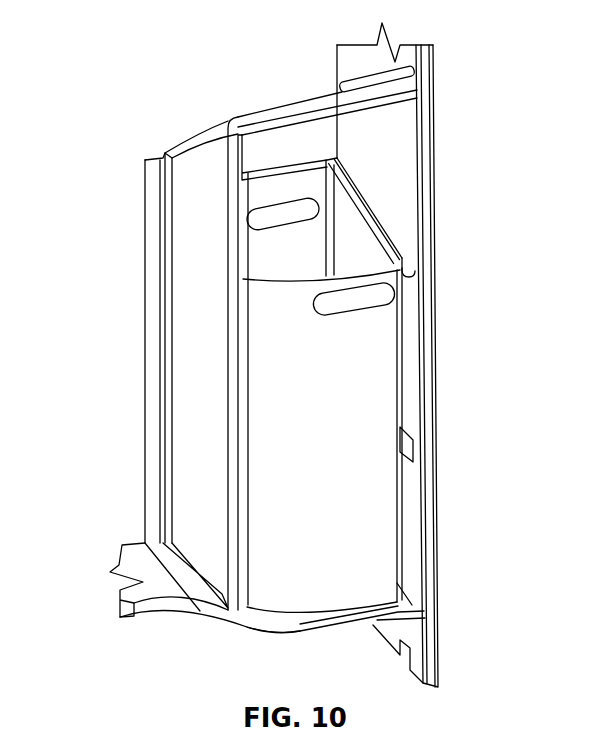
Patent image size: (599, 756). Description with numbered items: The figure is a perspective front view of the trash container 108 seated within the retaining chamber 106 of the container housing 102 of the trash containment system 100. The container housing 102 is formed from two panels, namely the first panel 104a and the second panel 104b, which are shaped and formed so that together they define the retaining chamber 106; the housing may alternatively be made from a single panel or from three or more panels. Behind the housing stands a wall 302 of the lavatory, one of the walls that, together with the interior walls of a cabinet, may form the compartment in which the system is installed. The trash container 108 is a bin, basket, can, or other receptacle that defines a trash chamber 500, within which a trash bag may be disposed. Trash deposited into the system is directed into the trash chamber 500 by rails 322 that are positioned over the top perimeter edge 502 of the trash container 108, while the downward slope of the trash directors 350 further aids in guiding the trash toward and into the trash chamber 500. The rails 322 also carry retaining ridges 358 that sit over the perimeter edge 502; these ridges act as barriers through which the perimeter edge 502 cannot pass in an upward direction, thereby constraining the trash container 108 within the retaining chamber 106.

The trash containment system 100 is at (284, 349).
The container housing 102 is at (198, 482).
The first panel 104a is at (193, 372).
The second panel 104b is at (403, 118).
The retaining chamber 106 is at (387, 155).
The trash container 108 is at (363, 405).
The wall of lavatory 302 is at (428, 60).
The rail 322 is at (290, 167).
The trash director 350 is at (368, 205).
The retaining ridge 358 is at (417, 275).
The trash chamber 500 is at (273, 278).
The top perimeter edge 502 is at (267, 275).